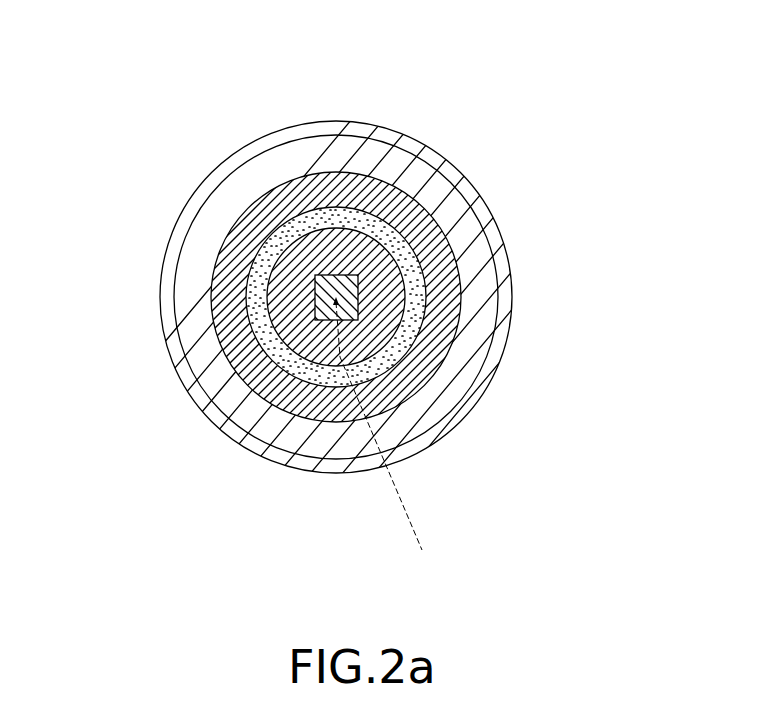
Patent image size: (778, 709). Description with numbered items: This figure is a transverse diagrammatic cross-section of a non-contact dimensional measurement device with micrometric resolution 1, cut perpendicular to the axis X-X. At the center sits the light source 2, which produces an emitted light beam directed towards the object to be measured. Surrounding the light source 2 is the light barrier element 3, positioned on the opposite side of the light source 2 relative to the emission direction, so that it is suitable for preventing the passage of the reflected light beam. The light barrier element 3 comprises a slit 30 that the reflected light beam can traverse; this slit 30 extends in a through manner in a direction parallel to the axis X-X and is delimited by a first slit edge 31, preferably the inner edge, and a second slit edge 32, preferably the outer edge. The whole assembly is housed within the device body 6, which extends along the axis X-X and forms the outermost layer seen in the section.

The non-contact dimensional measurement device with micrometric resolution 1 is at (389, 320).
The light source 2 is at (358, 295).
The light barrier element 3 is at (294, 251).
The device body 6 is at (502, 360).
The slit 30 is at (336, 250).
The first slit edge 31 is at (262, 310).
The second slit edge 32 is at (252, 255).